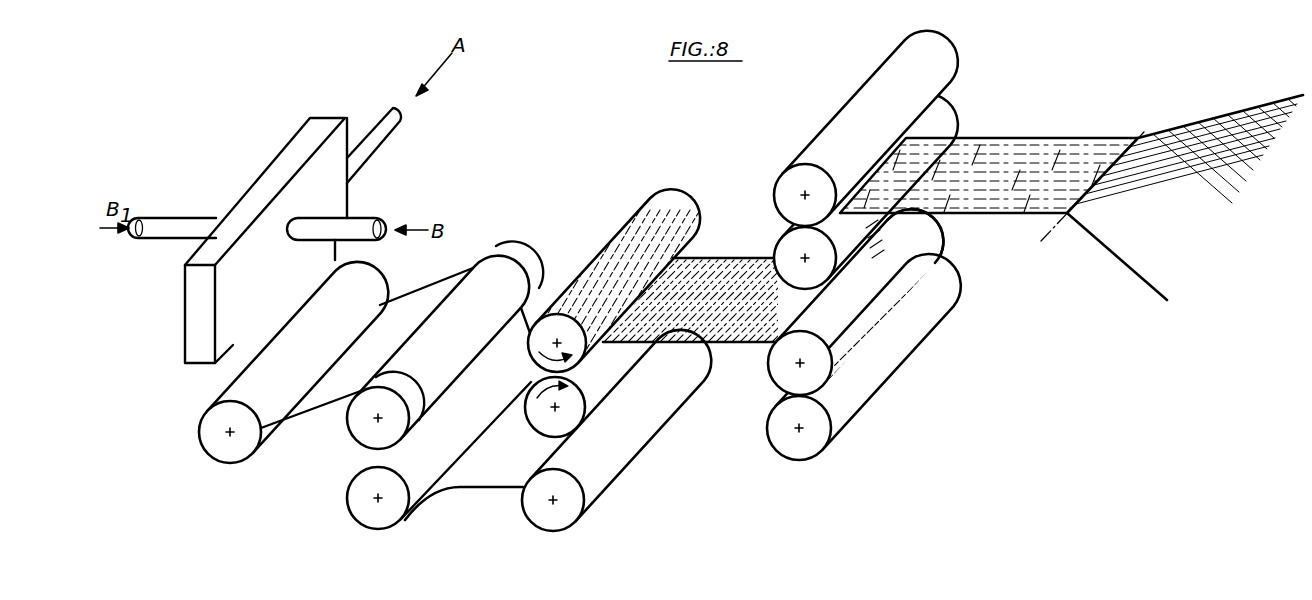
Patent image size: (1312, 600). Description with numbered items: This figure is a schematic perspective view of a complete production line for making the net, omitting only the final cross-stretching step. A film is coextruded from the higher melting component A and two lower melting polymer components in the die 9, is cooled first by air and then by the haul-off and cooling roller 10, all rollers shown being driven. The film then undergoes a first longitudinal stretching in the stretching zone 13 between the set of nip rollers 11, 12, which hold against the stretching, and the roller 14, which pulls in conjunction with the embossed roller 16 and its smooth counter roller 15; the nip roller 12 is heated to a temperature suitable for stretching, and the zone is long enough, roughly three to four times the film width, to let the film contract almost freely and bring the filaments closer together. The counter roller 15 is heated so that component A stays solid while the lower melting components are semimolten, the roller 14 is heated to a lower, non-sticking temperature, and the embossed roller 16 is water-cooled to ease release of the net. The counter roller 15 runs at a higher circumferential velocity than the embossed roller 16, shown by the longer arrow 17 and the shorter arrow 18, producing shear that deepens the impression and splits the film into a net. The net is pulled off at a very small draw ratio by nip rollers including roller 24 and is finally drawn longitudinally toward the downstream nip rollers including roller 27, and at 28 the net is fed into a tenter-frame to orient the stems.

The die 9 is at (192, 340).
The haul-off and cooling roller 10 is at (217, 445).
The nip roller 11 is at (362, 430).
The nip roller 12 is at (360, 508).
The stretching zone 13 is at (480, 488).
The roller 14 is at (555, 522).
The smooth counter roller 15 is at (540, 420).
The embossed roller 16 is at (645, 207).
The longer arrow 17 is at (547, 400).
The shorter arrow 18 is at (557, 343).
The nip roller 24 is at (812, 447).
The nip roller 27 is at (778, 200).
The feed point to tenter-frame 28 is at (1137, 136).